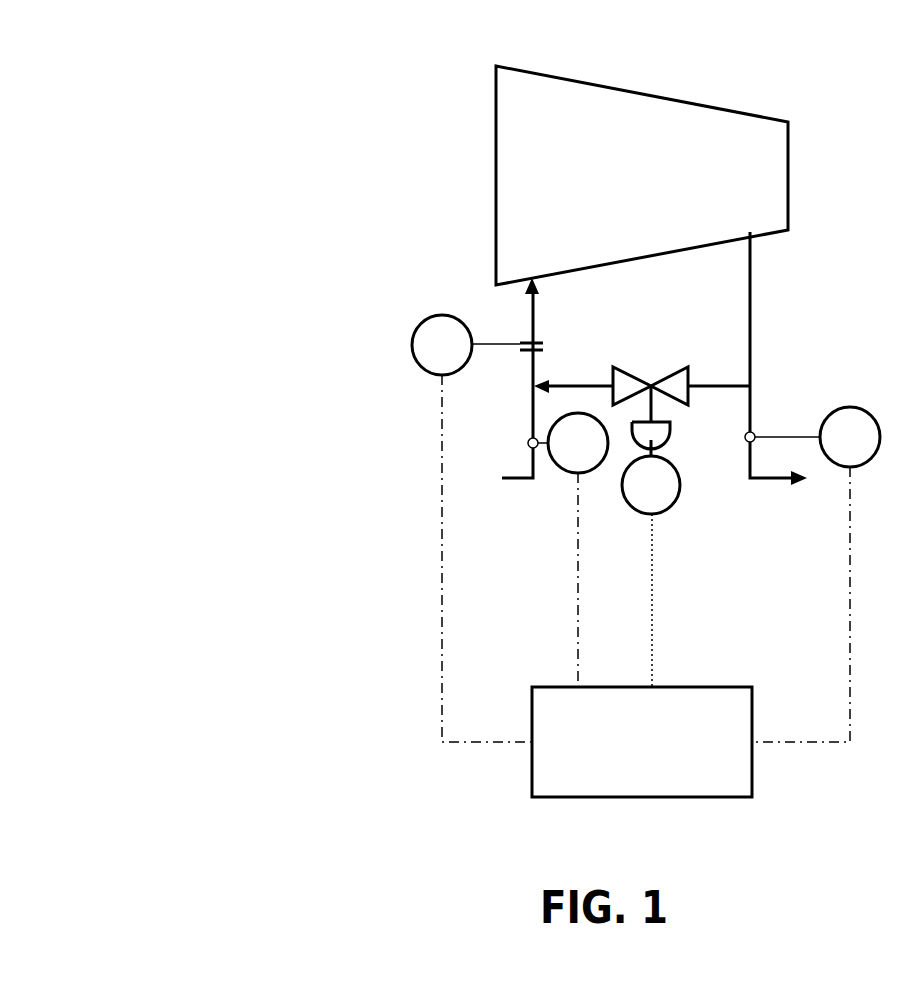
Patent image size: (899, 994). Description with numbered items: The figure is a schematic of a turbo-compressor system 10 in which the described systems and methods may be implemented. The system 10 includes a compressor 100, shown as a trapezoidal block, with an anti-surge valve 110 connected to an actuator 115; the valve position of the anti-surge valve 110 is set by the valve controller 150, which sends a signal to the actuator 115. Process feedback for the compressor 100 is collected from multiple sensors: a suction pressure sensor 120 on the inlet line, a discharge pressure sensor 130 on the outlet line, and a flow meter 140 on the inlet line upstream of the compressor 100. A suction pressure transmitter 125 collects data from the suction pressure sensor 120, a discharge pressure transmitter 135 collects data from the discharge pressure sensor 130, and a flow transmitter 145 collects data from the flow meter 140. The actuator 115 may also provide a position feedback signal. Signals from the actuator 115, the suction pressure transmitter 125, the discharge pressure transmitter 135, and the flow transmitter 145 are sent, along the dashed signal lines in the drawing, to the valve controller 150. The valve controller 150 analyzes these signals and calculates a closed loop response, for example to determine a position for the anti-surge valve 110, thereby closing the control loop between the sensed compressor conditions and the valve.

The turbo-compressor system 10 is at (92, 92).
The compressor 100 is at (642, 175).
The anti-surge valve 110 is at (620, 368).
The actuator 115 is at (651, 450).
The suction pressure sensor 120 is at (525, 443).
The suction pressure transmitter 125 is at (573, 443).
The discharge pressure sensor 130 is at (753, 430).
The discharge pressure transmitter 135 is at (817, 437).
The flow meter 140 is at (538, 340).
The flow transmitter 145 is at (466, 345).
The valve controller 150 is at (646, 586).